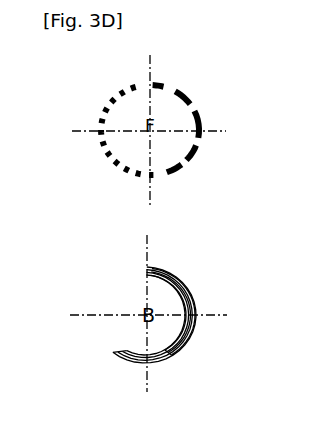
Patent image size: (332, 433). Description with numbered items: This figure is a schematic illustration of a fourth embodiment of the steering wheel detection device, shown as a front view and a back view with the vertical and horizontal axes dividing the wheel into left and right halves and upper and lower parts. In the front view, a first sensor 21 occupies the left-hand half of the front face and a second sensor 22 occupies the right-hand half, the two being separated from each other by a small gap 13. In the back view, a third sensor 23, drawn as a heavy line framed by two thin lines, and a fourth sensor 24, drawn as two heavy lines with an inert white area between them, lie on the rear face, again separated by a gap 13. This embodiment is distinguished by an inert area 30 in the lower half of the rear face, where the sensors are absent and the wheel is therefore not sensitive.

The gap 13 is at (147, 81).
The first sensor 21 is at (118, 100).
The second sensor 22 is at (186, 96).
The third sensor 23 is at (114, 274).
The fourth sensor 24 is at (179, 277).
The inert area 30 is at (150, 361).